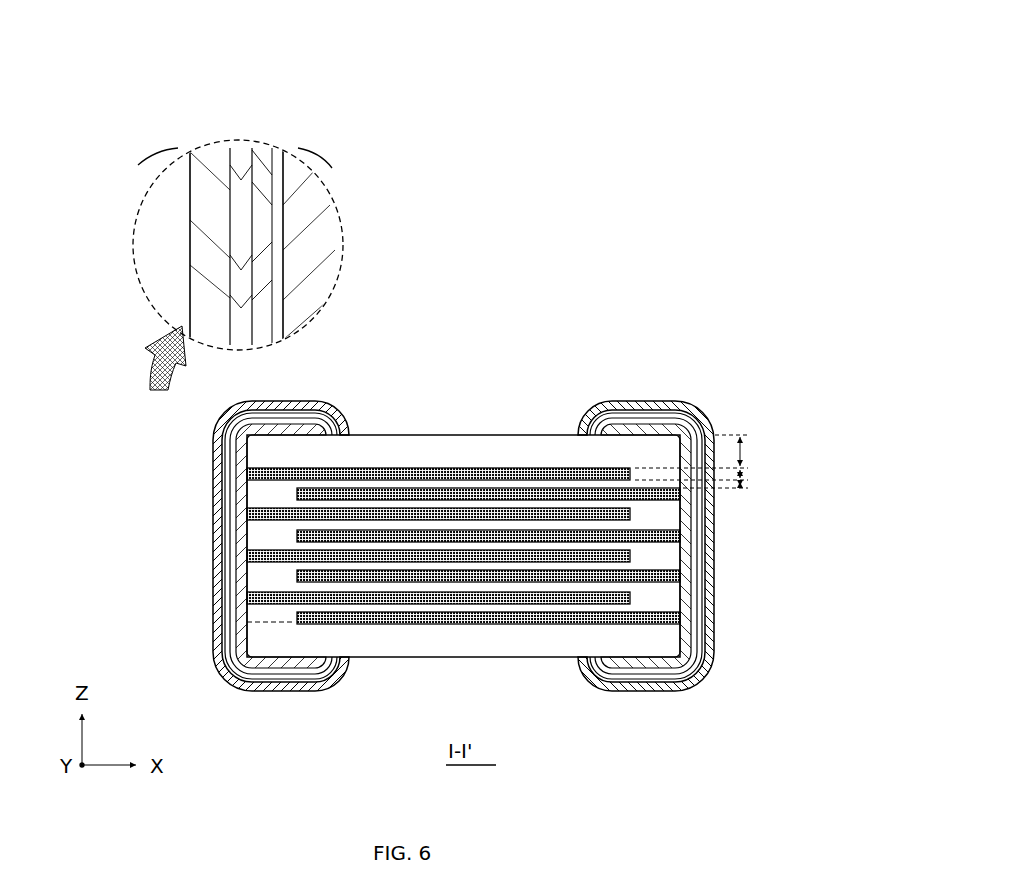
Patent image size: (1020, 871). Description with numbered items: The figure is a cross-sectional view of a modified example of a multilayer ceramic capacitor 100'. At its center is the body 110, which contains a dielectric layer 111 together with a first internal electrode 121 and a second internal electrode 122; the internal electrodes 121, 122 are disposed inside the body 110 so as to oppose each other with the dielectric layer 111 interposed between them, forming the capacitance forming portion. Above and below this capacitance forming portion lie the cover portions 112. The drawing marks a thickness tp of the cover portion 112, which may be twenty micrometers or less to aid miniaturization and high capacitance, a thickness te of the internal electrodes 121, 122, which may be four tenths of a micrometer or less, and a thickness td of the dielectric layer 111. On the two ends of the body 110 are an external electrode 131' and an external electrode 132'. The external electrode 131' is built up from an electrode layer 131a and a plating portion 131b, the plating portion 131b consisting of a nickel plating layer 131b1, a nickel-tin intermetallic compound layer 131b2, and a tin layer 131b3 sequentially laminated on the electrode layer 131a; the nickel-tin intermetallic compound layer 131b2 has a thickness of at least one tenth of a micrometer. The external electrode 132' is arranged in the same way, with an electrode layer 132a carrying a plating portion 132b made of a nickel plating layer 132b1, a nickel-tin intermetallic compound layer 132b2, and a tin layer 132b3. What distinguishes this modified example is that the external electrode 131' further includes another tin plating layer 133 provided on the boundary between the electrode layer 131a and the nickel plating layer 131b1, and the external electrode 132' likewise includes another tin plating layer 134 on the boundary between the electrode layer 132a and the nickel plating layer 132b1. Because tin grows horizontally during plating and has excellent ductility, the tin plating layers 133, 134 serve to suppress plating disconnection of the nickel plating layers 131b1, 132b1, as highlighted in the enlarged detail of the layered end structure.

The multilayer ceramic capacitor 100' is at (463, 496).
The body 110 is at (550, 433).
The dielectric layer 111 is at (352, 478).
The cover portion 112 is at (503, 453).
The first internal electrode 121 is at (453, 470).
The second internal electrode 122 is at (407, 495).
The external electrode 131' is at (210, 348).
The electrode layer 131a is at (213, 517).
The Sn plating layer 133 is at (222, 550).
The plating portion 131b is at (131, 577).
The nickel (Ni) plating layer 131b1 is at (228, 578).
The nickel-tin (Ni-Sn) intermetallic compound layer 131b2 is at (232, 617).
The tin (Sn) layer 131b3 is at (240, 652).
The external electrode 132' is at (747, 546).
The electrode layer 132a is at (713, 523).
The Sn plating layer 134 is at (705, 552).
The plating portion 132b is at (794, 577).
The nickel (Ni) plating layer 132b1 is at (710, 577).
The nickel-tin (Ni-Sn) intermetallic compound layer 132b2 is at (707, 620).
The tin (Sn) layer 132b3 is at (707, 655).
The thickness of cover portion tp is at (745, 450).
The thickness of internal electrode te is at (745, 472).
The thickness of dielectric layer td is at (745, 482).